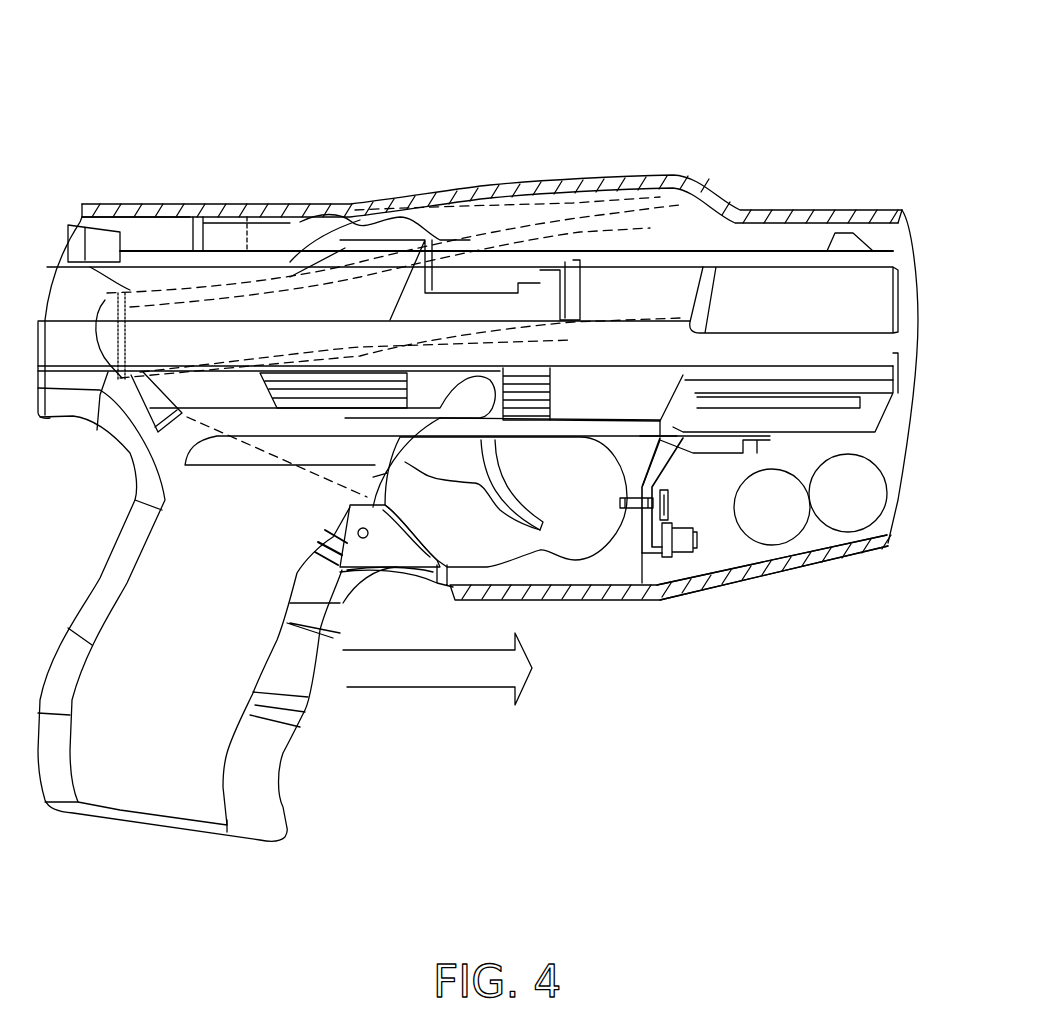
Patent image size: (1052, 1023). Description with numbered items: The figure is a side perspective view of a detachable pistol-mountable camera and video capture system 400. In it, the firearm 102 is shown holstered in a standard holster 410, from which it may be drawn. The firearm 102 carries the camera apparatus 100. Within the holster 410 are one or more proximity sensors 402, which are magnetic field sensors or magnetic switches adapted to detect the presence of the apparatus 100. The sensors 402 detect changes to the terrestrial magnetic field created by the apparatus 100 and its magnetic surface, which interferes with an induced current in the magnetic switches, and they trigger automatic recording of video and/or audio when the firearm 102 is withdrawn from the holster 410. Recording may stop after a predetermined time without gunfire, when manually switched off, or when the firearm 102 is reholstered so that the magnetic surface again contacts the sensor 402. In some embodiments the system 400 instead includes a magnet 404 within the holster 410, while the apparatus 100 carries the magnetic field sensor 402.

The detachable pistol-mountable camera and video capture system 400 is at (498, 435).
The apparatus 100 is at (667, 470).
The firearm 102 is at (227, 610).
The proximity sensors 402 is at (787, 523).
The magnet 404 is at (848, 490).
The holster 410 is at (650, 578).